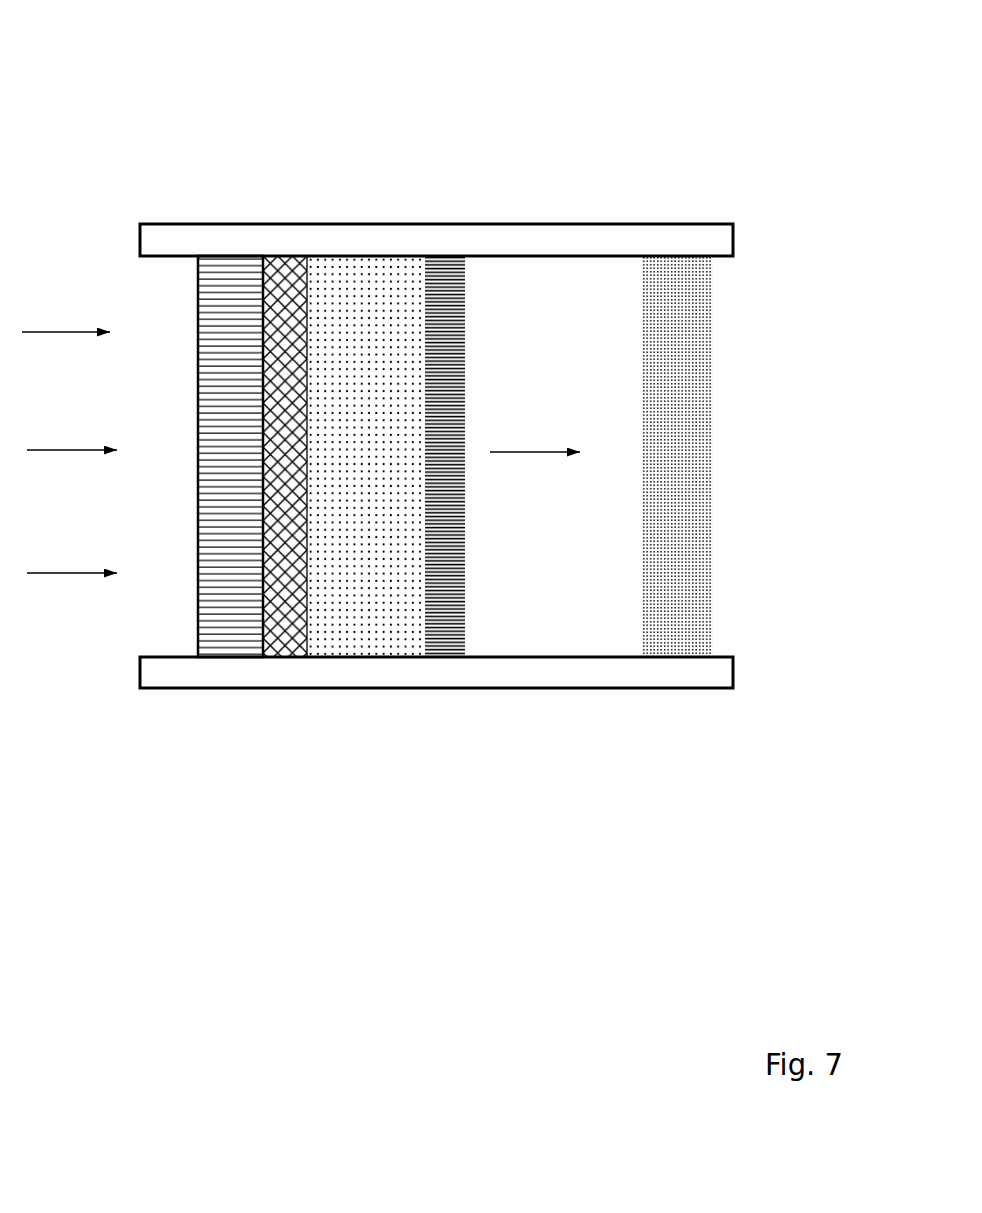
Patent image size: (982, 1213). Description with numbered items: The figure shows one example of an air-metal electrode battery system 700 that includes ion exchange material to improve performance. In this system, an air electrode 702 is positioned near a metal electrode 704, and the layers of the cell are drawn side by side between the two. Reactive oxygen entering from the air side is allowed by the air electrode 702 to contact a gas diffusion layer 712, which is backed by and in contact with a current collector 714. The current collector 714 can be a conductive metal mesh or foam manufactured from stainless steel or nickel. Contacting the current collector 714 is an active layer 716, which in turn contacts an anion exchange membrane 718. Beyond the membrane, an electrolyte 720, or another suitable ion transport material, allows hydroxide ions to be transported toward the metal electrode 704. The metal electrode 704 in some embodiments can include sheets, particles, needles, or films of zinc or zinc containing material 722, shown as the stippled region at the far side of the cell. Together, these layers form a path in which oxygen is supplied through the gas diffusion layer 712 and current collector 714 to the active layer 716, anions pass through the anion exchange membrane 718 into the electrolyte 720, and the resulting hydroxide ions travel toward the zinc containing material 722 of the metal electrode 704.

The air-metal electrode battery system 700 is at (120, 73).
The air electrode 702 is at (328, 202).
The metal electrode 704 is at (690, 202).
The gas diffusion layer 712 is at (218, 333).
The current collector 714 is at (287, 637).
The active layer 716 is at (368, 640).
The anion exchange membrane 718 is at (440, 640).
The electrolyte 720 is at (511, 314).
The zinc containing material 722 is at (683, 390).